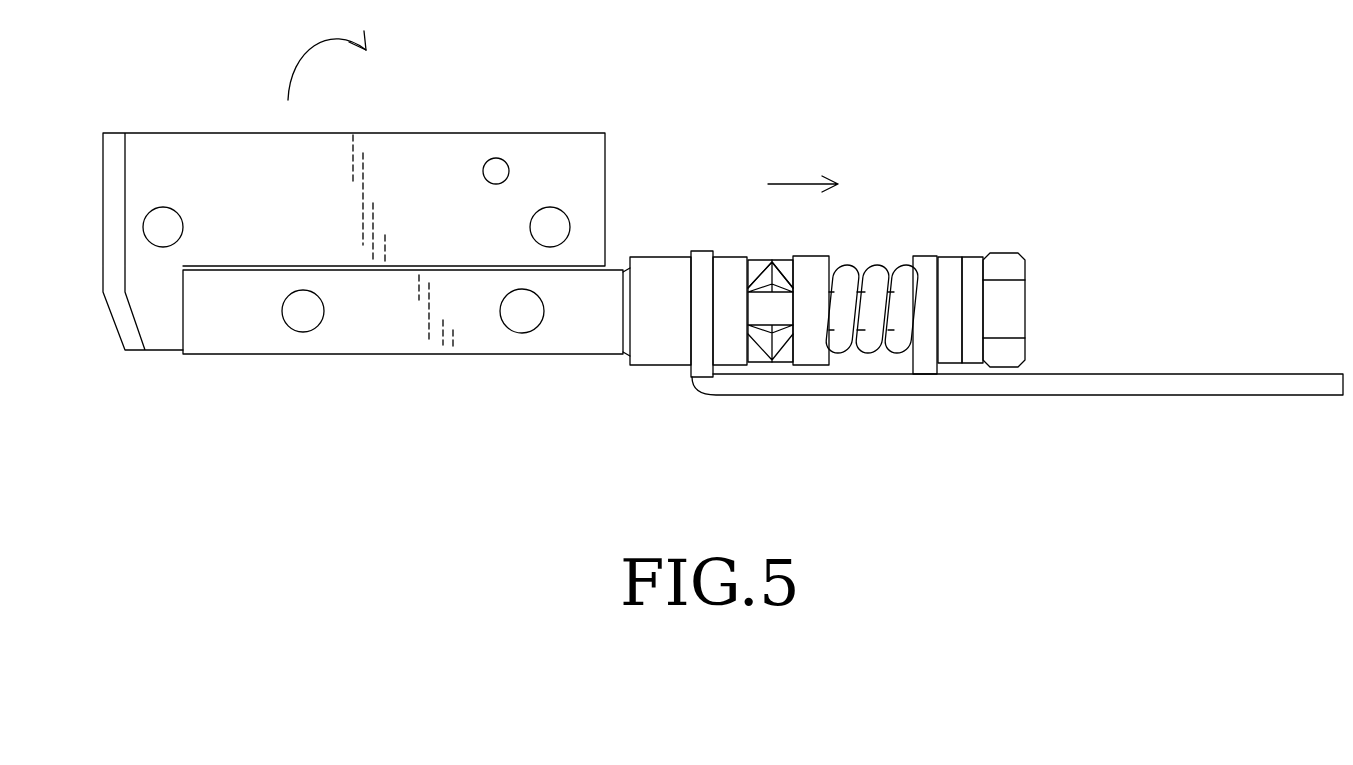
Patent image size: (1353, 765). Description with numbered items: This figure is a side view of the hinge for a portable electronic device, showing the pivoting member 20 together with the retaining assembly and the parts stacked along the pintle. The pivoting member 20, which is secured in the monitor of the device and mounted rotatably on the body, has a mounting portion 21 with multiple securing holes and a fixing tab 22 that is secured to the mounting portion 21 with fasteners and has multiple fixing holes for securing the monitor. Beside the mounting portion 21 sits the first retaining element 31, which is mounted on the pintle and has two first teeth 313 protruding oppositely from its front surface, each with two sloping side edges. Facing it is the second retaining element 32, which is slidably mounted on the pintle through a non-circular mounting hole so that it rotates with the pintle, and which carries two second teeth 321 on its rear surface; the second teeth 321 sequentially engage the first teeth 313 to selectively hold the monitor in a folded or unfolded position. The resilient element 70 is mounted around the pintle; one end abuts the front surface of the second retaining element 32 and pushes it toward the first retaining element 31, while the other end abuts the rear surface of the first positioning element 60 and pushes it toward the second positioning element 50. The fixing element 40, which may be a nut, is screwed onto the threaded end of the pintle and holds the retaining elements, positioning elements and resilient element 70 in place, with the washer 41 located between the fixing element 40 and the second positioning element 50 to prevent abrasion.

The pivoting member 20 is at (1087, 387).
The mounting portion 21 is at (398, 340).
The fixing tab 22 is at (249, 143).
The first retaining element 31 is at (733, 265).
The first teeth 313 is at (760, 355).
The second retaining element 32 is at (815, 262).
The second teeth 321 is at (783, 355).
The fixing element 40 is at (1015, 272).
The washer 41 is at (978, 259).
The second positioning element 50 is at (952, 262).
The first positioning element 60 is at (925, 262).
The resilient element 70 is at (862, 272).